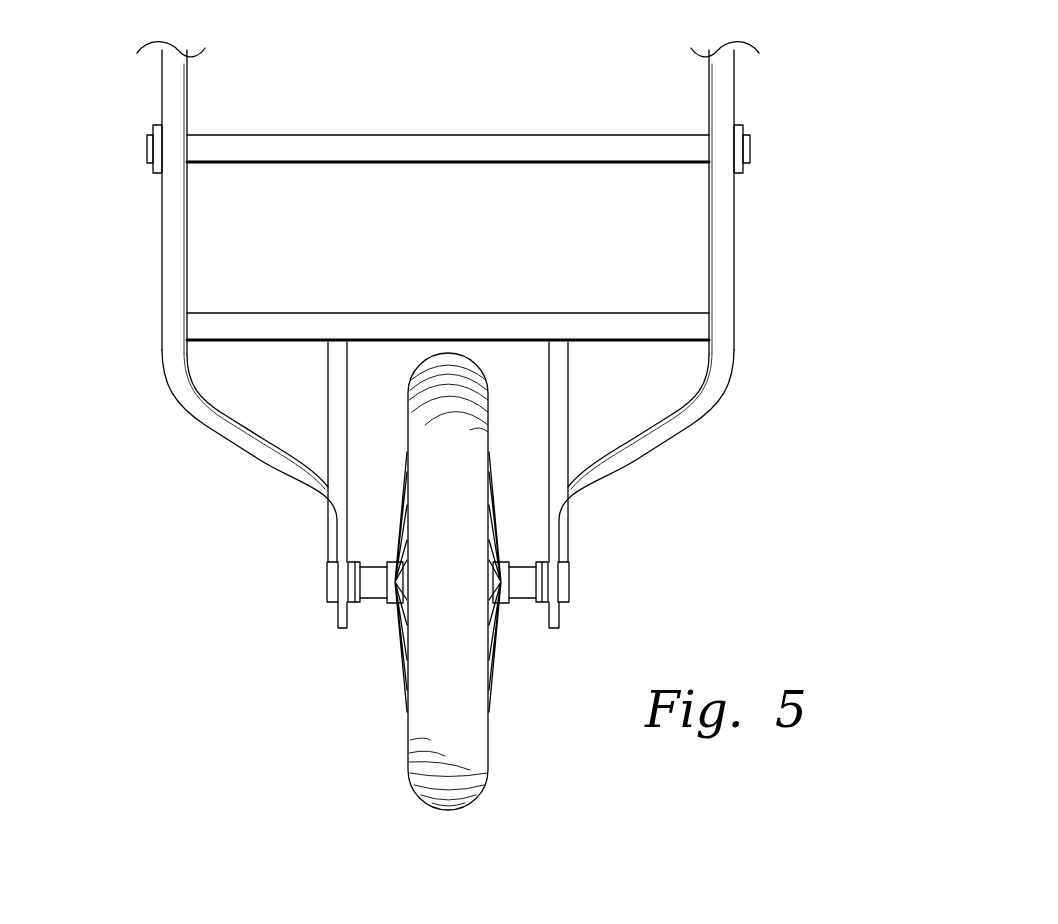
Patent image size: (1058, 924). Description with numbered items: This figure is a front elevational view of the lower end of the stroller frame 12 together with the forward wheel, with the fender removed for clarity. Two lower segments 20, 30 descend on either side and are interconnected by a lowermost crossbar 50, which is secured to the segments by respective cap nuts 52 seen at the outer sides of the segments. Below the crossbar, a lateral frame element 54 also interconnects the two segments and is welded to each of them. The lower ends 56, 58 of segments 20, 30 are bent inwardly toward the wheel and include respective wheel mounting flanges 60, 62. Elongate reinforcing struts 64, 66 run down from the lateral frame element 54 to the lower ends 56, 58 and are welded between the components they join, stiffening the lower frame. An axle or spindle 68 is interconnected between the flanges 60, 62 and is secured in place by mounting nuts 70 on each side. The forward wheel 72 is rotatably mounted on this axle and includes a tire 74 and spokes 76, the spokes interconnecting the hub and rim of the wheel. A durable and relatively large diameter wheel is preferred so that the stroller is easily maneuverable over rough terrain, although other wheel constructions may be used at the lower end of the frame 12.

The frame 12 is at (807, 346).
The lower segment 20 is at (735, 231).
The lower segment 30 is at (160, 240).
The lowermost crossbar 50 is at (375, 133).
The cap nut 52 is at (147, 140).
The lateral frame element 54 is at (440, 313).
The lower end 56 is at (640, 472).
The lower end 58 is at (263, 483).
The wheel mounting flange 60 is at (553, 632).
The wheel mounting flange 62 is at (342, 632).
The reinforcing strut 64 is at (569, 385).
The reinforcing strut 66 is at (326, 380).
The axle 68 is at (387, 604).
The mounting nut 70 is at (384, 561).
The forward wheel 72 is at (410, 788).
The tire 74 is at (458, 748).
The spokes 76 is at (403, 663).